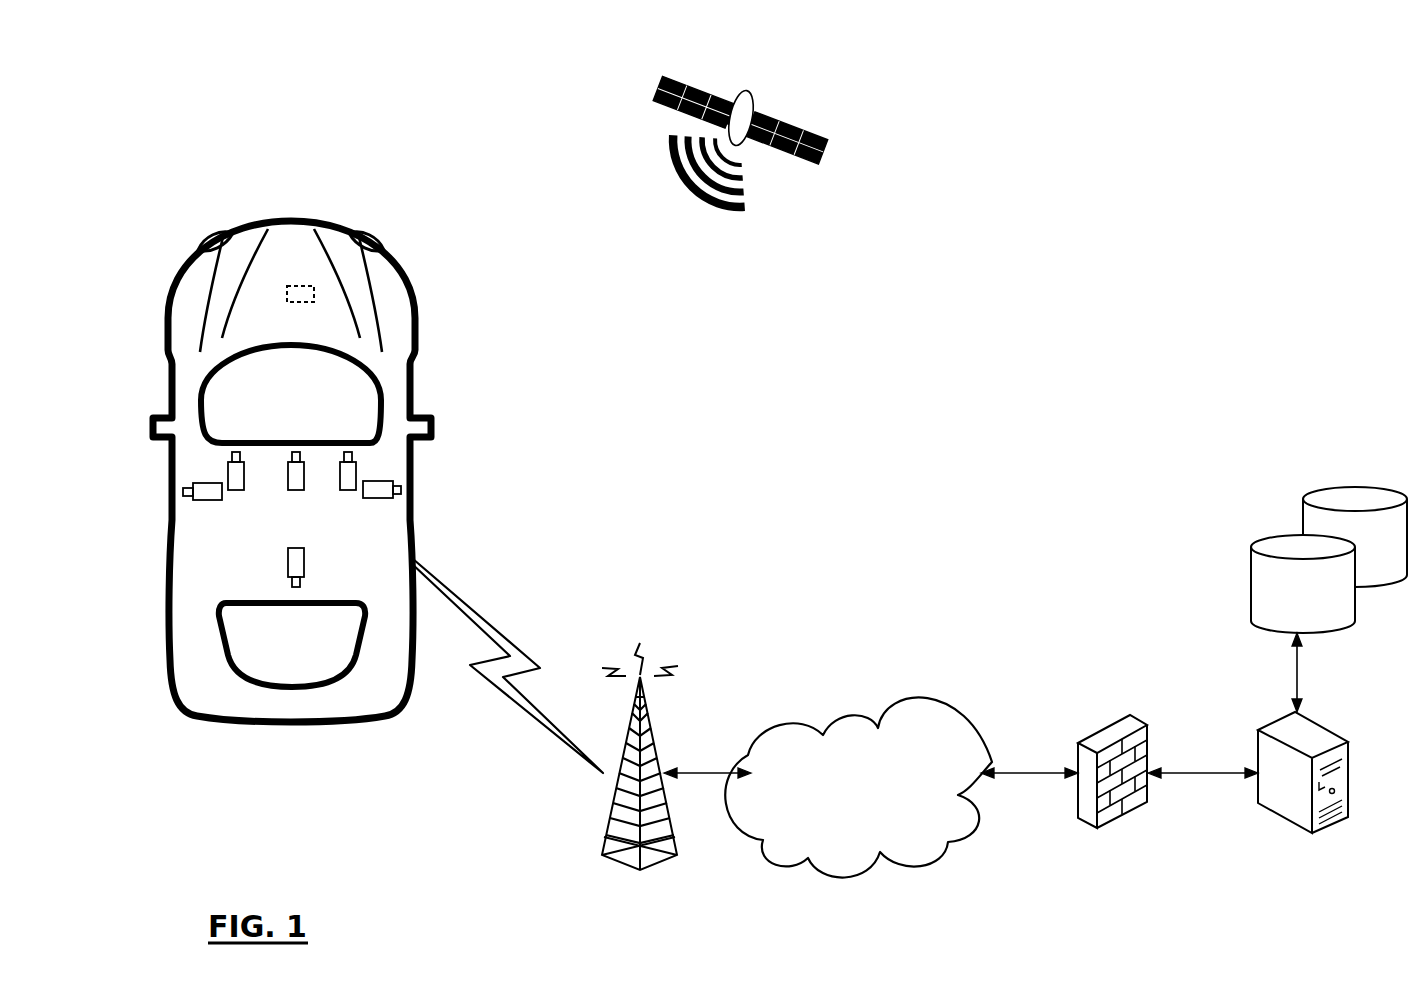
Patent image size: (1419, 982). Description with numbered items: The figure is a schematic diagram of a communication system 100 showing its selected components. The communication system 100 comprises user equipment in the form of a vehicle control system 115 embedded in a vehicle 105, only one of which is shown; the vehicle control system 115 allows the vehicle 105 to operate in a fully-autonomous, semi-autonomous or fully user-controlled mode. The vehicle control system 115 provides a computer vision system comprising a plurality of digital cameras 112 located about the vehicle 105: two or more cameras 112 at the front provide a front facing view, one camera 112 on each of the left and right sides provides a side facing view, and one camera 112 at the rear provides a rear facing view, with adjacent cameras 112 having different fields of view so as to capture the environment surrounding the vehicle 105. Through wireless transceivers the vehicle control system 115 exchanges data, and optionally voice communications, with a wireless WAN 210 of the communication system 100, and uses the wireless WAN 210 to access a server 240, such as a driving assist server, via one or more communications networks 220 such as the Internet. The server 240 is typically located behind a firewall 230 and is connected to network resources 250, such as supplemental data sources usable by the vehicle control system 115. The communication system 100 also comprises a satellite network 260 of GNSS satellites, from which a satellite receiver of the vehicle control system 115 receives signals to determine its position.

The communication system 100 is at (240, 80).
The vehicle 105 is at (387, 310).
The digital cameras 112 is at (348, 450).
The vehicle control system 115 is at (292, 288).
The wireless wide area network (WAN) 210 is at (648, 789).
The communications networks 220 is at (858, 787).
The firewall 230 is at (1111, 797).
The server 240 is at (1303, 796).
The network resources 250 is at (1242, 560).
The satellite network 260 is at (746, 166).